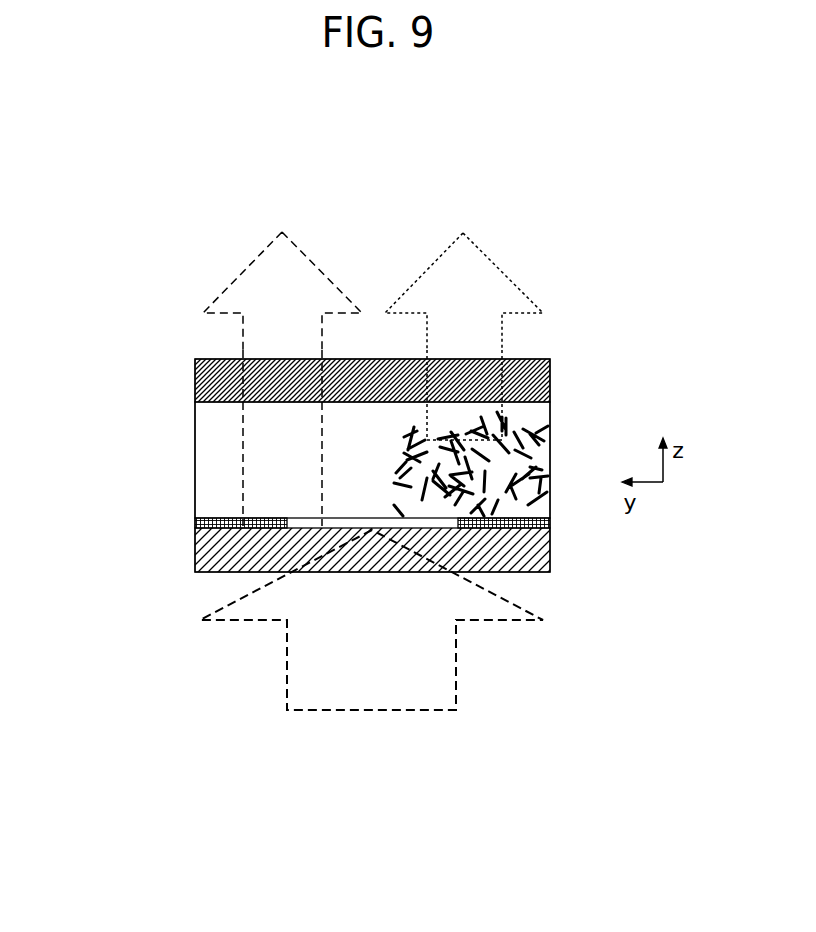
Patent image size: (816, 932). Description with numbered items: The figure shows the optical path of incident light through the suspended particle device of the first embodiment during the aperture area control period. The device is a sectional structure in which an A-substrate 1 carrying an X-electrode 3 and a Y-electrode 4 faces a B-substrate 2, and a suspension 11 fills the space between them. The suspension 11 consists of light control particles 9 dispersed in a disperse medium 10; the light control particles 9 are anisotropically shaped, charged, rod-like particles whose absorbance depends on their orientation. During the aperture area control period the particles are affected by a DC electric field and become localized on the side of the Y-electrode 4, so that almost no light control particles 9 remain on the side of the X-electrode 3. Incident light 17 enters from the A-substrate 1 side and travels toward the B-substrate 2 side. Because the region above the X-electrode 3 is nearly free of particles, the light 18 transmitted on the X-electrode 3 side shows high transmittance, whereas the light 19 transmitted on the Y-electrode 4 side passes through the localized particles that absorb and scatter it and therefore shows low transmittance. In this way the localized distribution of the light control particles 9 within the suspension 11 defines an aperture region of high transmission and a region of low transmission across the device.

The A-substrate 1 is at (195, 548).
The B-substrate 2 is at (195, 378).
The X-electrode 3 is at (195, 520).
The Y-electrode 4 is at (550, 522).
The light control particles 9 is at (408, 420).
The disperse medium 10 is at (210, 483).
The suspension 11 is at (112, 403).
The incident light 17 is at (407, 712).
The light transmitted on the X-electrode side 18 is at (282, 232).
The light transmitted on the Y-electrode side 19 is at (463, 233).